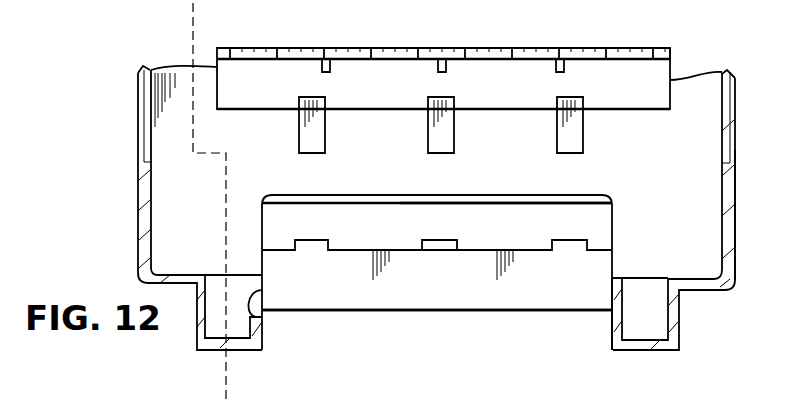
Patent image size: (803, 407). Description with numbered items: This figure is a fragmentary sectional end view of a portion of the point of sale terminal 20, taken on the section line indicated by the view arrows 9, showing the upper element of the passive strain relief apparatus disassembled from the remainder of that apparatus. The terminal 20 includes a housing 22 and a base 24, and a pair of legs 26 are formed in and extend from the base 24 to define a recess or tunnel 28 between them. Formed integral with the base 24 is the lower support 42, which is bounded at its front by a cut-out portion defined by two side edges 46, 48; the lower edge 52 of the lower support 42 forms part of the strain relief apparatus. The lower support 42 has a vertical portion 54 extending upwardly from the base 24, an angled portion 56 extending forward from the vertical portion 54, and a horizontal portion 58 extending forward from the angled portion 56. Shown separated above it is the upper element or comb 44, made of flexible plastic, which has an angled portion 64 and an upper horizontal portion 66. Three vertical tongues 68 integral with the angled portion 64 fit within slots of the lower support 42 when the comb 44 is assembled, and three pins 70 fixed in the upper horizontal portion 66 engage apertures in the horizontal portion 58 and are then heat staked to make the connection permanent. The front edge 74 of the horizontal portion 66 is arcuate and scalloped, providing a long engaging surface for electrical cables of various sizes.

The line 12-12 of FIG. 9 is at (178, 17).
The point of sale terminal 20 is at (124, 186).
The housing 22 is at (740, 258).
The base 24 is at (168, 275).
The legs 26 is at (194, 341).
The recess or tunnel 28 is at (373, 312).
The lower support 42 is at (614, 227).
The upper element or comb 44 is at (296, 48).
The side edge 46 is at (262, 290).
The side edge 48 is at (621, 318).
The lower edge 52 is at (528, 312).
The vertical portion 54 is at (462, 295).
The angled portion 56 is at (395, 218).
The horizontal portion 58 is at (520, 196).
The angled portion 64 is at (665, 93).
The upper horizontal portion 66 is at (470, 49).
The vertical tongues 68 is at (560, 130).
The pins 70 is at (556, 68).
The front edge 74 is at (670, 53).